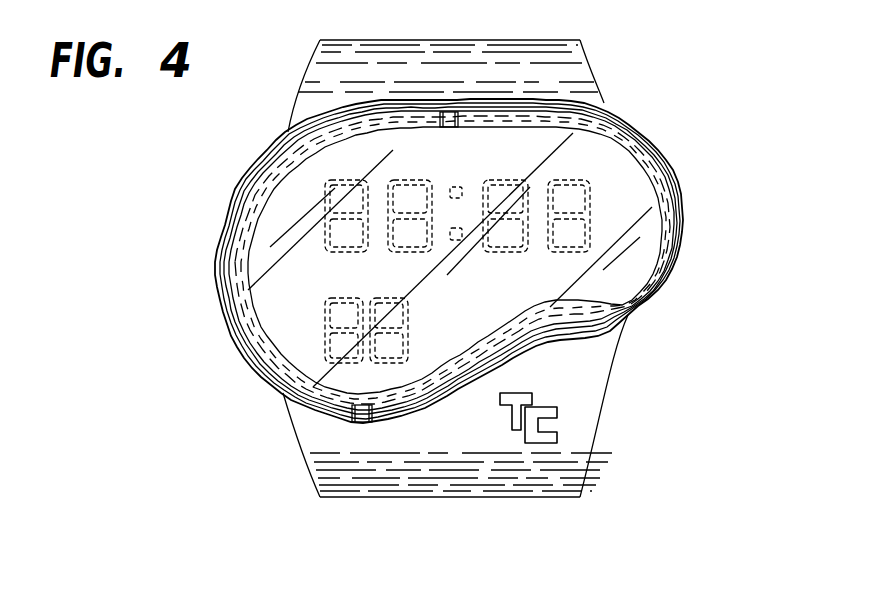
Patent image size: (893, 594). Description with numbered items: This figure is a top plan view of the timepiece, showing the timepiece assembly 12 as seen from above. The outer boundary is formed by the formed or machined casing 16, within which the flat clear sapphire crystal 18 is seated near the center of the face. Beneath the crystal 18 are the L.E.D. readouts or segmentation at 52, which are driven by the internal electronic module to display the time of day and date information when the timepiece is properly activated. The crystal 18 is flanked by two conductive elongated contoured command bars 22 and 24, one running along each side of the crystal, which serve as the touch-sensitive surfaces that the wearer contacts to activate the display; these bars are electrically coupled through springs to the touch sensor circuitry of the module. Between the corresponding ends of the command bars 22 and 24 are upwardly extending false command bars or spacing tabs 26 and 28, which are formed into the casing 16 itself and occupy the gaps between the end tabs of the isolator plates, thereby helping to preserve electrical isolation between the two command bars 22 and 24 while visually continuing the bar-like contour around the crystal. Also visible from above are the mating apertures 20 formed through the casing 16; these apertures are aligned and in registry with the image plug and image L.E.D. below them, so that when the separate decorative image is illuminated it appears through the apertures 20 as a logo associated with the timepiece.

The timepiece assembly 12 is at (607, 100).
The casing 16 is at (683, 197).
The crystal 18 is at (620, 189).
The mating apertures 20 is at (550, 425).
The command bar 22 is at (657, 277).
The command bar 24 is at (240, 315).
The false command bar 26 is at (450, 117).
The false command bar 28 is at (360, 418).
The L.E.D. readouts 52 is at (512, 257).